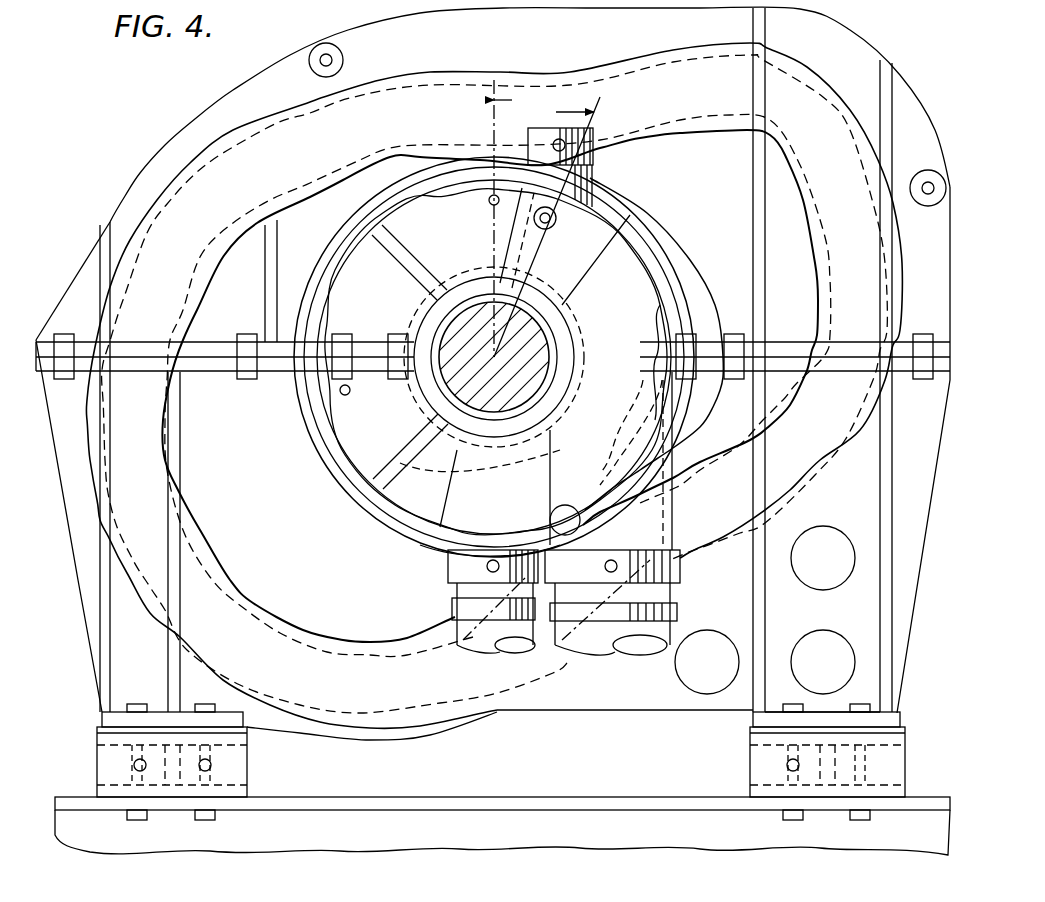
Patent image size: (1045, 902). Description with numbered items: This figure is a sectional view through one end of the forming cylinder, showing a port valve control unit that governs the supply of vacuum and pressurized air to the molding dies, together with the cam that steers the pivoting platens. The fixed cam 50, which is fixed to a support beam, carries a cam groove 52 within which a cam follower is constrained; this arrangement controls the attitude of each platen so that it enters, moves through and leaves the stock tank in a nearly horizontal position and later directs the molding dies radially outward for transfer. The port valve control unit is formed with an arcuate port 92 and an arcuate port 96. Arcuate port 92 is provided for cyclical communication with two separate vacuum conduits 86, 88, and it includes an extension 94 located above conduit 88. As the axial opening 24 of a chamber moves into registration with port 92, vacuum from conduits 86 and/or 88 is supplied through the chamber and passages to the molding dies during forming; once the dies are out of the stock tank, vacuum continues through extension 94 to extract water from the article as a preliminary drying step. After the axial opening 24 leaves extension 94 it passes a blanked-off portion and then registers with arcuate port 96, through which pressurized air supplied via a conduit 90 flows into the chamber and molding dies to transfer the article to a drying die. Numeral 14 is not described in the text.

The shaft 14 is at (443, 377).
The axial opening 24 is at (513, 263).
The fixed cam 50 is at (580, 72).
The cam groove 52 is at (677, 110).
The vacuum conduit 86 is at (487, 633).
The vacuum conduit 88 is at (607, 633).
The conduit 90 is at (530, 130).
The arcuate port 92 is at (512, 501).
The extension 94 is at (636, 384).
The arcuate port 96 is at (557, 240).